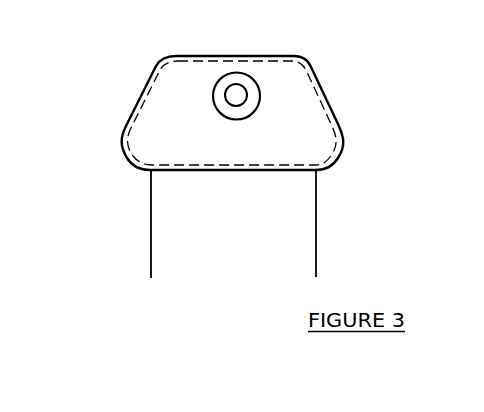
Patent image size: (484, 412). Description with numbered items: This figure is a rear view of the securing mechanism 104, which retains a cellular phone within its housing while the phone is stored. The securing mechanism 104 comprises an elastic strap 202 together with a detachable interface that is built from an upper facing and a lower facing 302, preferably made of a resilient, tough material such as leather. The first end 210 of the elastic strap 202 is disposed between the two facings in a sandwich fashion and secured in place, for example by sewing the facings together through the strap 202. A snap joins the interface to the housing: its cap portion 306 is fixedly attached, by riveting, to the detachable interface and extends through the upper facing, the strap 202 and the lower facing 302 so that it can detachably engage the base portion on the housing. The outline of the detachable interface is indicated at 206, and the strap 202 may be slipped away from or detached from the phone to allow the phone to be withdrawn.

The securing mechanism 104 is at (350, 36).
The head housing 206 is at (147, 102).
The lower facing 302 is at (162, 145).
The cap portion 306 is at (234, 93).
The strap 202 is at (147, 229).
The first end 210 is at (320, 179).